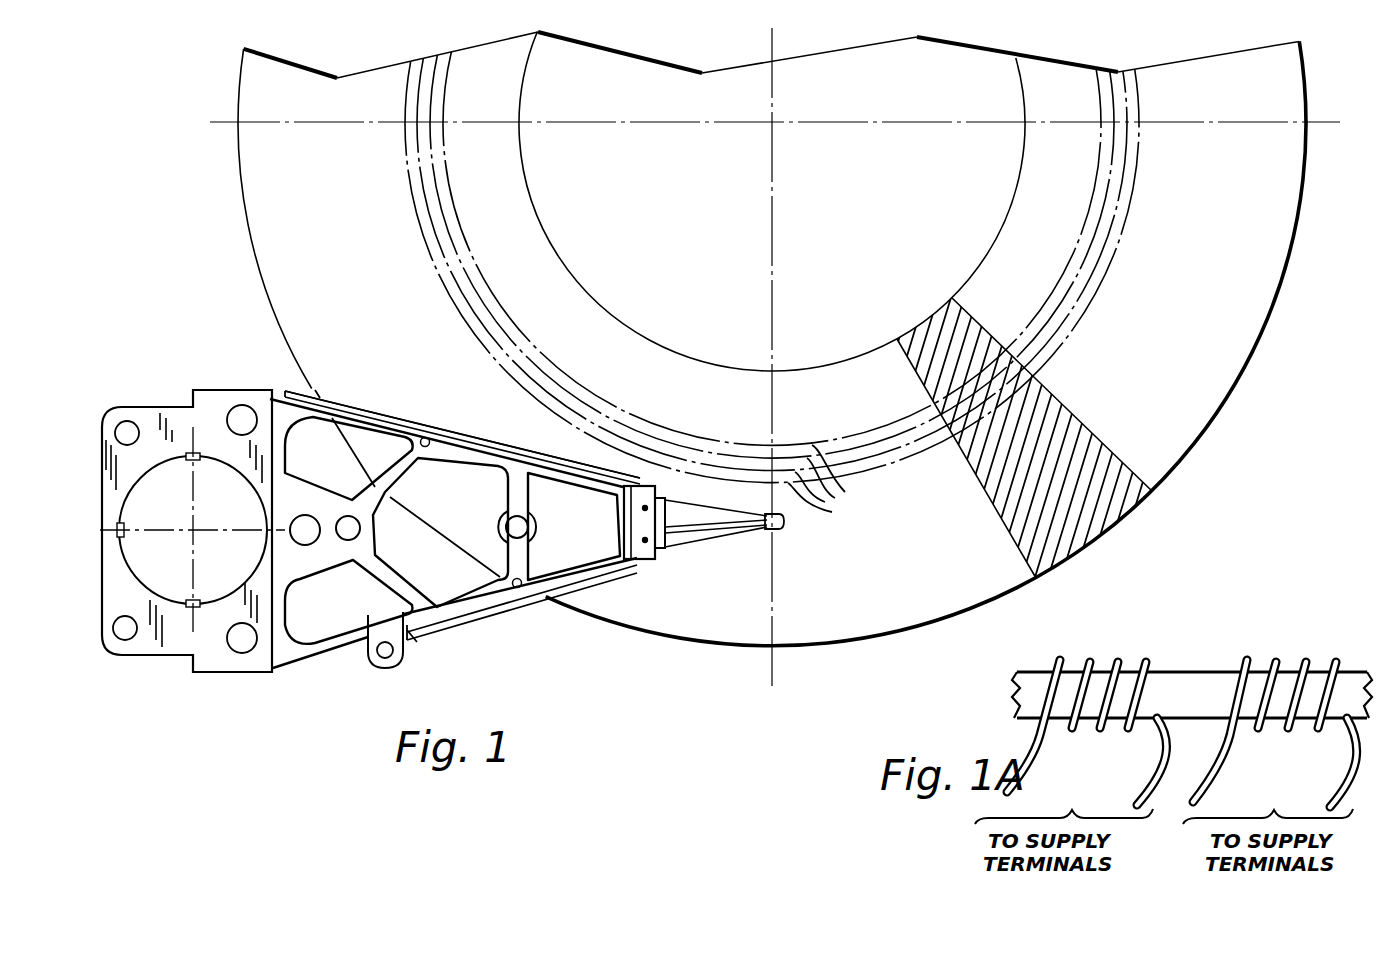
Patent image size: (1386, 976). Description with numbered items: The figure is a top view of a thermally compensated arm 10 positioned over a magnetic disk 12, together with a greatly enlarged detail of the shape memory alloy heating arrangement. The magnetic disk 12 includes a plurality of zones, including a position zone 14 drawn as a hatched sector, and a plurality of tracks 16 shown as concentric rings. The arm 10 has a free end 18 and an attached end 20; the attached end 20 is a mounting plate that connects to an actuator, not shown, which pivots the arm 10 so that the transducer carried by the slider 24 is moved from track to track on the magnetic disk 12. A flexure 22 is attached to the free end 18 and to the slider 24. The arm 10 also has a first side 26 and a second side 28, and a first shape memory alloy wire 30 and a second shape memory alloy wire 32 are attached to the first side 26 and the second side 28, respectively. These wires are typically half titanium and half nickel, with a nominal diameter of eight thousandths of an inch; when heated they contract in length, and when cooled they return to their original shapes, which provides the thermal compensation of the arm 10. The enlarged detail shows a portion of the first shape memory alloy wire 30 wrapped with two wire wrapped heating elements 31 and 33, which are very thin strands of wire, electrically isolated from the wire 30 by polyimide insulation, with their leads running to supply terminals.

In FIG. 1, the thermally compensated arm 10 is at (176, 378).
In FIG. 1, the magnetic disk 12 is at (935, 577).
In FIG. 1, the position zone 14 is at (1060, 410).
In FIG. 1, the tracks 16 is at (832, 512).
In FIG. 1, the free end 18 is at (633, 553).
In FIG. 1, the attached end 20 is at (97, 617).
In FIG. 1, the flexure 22 is at (700, 546).
In FIG. 1, the slider 24 is at (774, 531).
In FIG. 1, the first side 26 is at (423, 420).
In FIG. 1, the second side 28 is at (475, 615).
In FIG. 1, the first shape memory alloy wire 30 is at (553, 453).
In FIG. 1A, the first shape memory alloy wire 30 is at (1193, 672).
In FIG. 1A, the wire wrapped heating element 31 is at (1070, 647).
In FIG. 1, the second shape memory alloy wire 32 is at (540, 605).
In FIG. 1A, the wire wrapped heating element 33 is at (1342, 643).